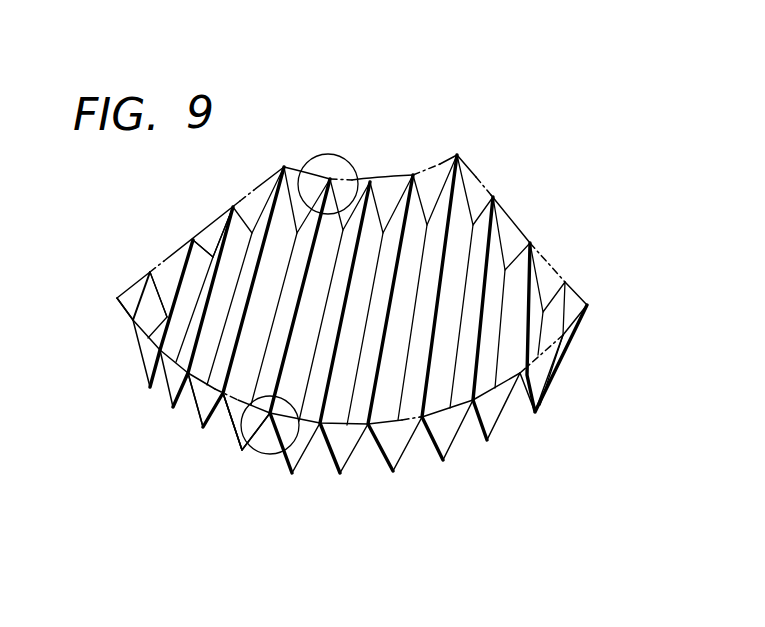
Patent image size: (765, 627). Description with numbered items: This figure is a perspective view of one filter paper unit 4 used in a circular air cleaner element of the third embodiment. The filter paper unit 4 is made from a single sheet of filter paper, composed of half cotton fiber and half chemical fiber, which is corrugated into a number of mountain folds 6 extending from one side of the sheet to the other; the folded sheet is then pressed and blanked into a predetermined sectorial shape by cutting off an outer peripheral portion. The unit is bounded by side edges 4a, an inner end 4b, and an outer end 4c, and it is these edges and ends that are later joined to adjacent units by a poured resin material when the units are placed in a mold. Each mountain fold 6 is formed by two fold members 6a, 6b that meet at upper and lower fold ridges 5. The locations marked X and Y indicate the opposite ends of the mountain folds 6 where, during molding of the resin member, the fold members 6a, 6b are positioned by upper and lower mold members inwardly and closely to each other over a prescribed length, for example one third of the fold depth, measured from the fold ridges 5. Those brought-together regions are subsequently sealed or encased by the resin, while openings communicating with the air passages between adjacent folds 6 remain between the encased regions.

The filter paper unit 4 is at (522, 177).
The side edge 4a is at (213, 223).
The inner end 4b is at (396, 174).
The outer end 4c is at (324, 458).
The fold ridge 5 is at (183, 253).
The mountain fold 6 is at (214, 438).
The fold member 6a is at (232, 439).
The fold member 6b is at (209, 431).
The end region of mountain fold X is at (341, 153).
The end region of mountain fold Y is at (272, 459).